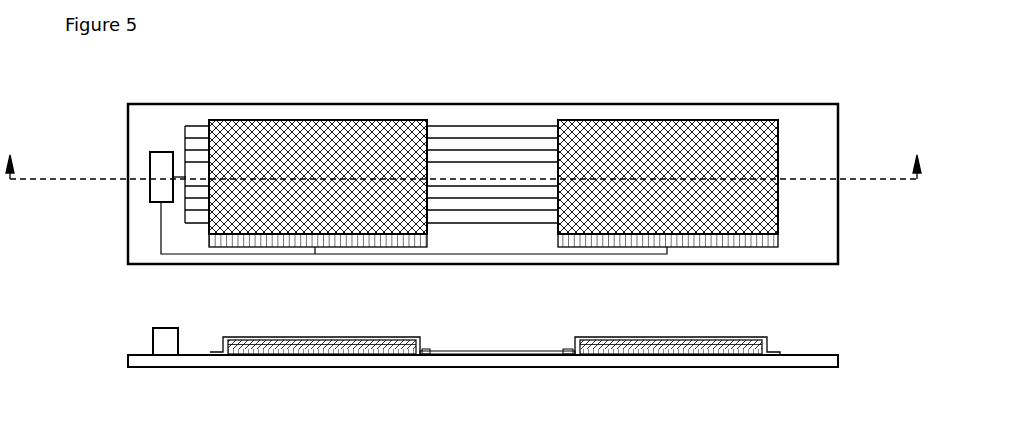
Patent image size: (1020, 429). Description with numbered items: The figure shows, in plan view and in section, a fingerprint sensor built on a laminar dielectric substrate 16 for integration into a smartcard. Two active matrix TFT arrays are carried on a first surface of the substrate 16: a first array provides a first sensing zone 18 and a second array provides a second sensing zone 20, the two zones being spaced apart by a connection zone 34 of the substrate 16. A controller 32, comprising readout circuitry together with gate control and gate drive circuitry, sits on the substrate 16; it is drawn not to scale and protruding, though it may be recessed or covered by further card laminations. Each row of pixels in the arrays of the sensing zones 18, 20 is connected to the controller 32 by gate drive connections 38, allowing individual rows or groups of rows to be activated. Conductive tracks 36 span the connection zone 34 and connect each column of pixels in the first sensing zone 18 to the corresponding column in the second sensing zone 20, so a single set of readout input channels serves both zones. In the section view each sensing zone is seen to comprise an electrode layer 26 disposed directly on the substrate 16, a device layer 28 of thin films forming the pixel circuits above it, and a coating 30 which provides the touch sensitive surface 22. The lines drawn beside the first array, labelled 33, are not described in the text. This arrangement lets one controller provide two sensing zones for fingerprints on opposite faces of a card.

The laminar dielectric substrate 16 is at (142, 243).
The first sensing zone 18 is at (318, 183).
The second sensing zone 20 is at (668, 183).
The touch sensitive surface 22 is at (685, 337).
The electrode layer 26 is at (573, 341).
The device layer 28 is at (572, 364).
The coating 30 is at (575, 339).
The controller 32 is at (152, 153).
The connection lines 33 is at (185, 126).
The connection zone 34 is at (477, 117).
The conductive tracks 36 is at (510, 126).
The gate drive connections 38 is at (558, 246).